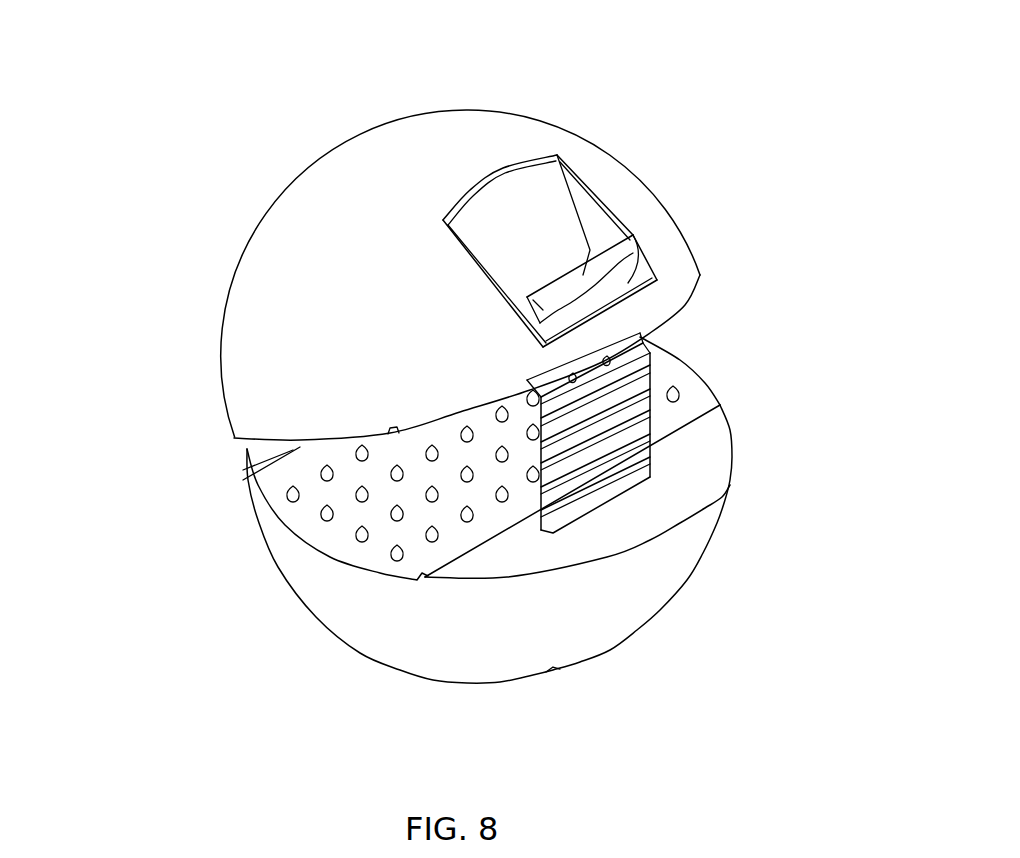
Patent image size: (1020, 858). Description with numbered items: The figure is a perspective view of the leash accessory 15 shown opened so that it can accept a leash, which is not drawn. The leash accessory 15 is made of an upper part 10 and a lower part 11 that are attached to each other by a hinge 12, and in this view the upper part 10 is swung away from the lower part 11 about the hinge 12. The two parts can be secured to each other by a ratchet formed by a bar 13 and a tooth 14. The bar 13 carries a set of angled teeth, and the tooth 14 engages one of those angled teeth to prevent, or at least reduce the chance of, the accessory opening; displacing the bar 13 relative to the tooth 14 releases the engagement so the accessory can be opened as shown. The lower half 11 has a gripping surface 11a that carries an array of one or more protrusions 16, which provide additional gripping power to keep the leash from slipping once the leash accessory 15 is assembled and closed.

The upper part 10 is at (600, 148).
The lower part 11 is at (370, 657).
The gripping surface 11a is at (337, 543).
The hinge 12 is at (238, 438).
The bar 13 is at (628, 386).
The tooth 14 is at (600, 284).
The leash accessory 15 is at (301, 123).
The protrusions 16 is at (287, 491).